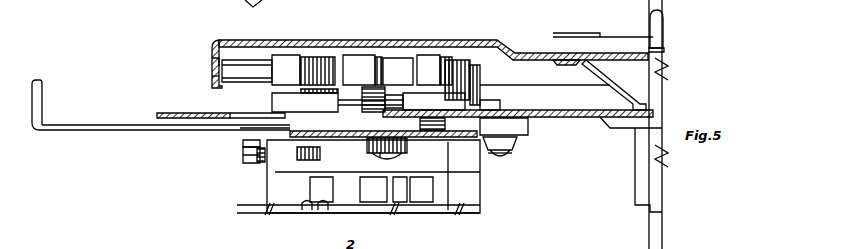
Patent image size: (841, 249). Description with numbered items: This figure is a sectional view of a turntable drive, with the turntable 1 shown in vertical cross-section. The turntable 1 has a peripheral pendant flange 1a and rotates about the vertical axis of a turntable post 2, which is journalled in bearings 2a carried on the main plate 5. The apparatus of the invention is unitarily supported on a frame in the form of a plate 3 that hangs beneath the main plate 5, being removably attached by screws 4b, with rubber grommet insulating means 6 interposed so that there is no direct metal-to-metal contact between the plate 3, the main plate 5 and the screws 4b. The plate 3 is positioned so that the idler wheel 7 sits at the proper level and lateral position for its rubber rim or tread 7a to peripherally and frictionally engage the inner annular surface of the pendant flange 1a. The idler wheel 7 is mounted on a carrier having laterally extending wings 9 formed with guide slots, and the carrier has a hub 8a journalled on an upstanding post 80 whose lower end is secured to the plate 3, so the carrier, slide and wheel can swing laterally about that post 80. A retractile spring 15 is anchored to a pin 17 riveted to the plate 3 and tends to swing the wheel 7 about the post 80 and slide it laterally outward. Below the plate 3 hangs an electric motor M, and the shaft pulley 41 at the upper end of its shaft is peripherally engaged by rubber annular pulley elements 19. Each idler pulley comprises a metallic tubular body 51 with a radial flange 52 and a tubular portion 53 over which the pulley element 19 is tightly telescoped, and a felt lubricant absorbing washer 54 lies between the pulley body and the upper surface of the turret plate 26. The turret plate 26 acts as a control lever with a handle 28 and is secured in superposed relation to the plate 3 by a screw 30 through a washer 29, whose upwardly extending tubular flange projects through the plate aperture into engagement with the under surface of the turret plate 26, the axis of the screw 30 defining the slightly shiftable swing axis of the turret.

The turntable 1 is at (510, 37).
The peripheral pendant flange 1a is at (210, 62).
The turntable post 2 is at (662, 60).
The bearings 2a is at (650, 177).
The plate 3 is at (528, 133).
The screws 4b is at (510, 160).
The main plate 5 is at (662, 110).
The rubber grommet insulating means 6 is at (530, 125).
The idler wheel 7 is at (252, 58).
The rubber rim or tread 7a is at (210, 77).
The hub 8a is at (476, 64).
The wings 9 is at (487, 101).
The retractile spring 15 is at (262, 163).
The pin 17 is at (247, 160).
The annular pulley element 19 is at (270, 100).
The turret plate 26 is at (428, 132).
The handle 28 is at (83, 123).
The washer 29 is at (375, 153).
The screw 30 is at (380, 152).
The shaft pulley 41 is at (296, 155).
The tubular body 51 is at (287, 68).
The radial flange 52 is at (298, 90).
The tubular portion 53 is at (245, 130).
The lubricant absorbing washer 54 is at (243, 143).
The upstanding post 80 is at (460, 58).
The electric motor M is at (383, 158).